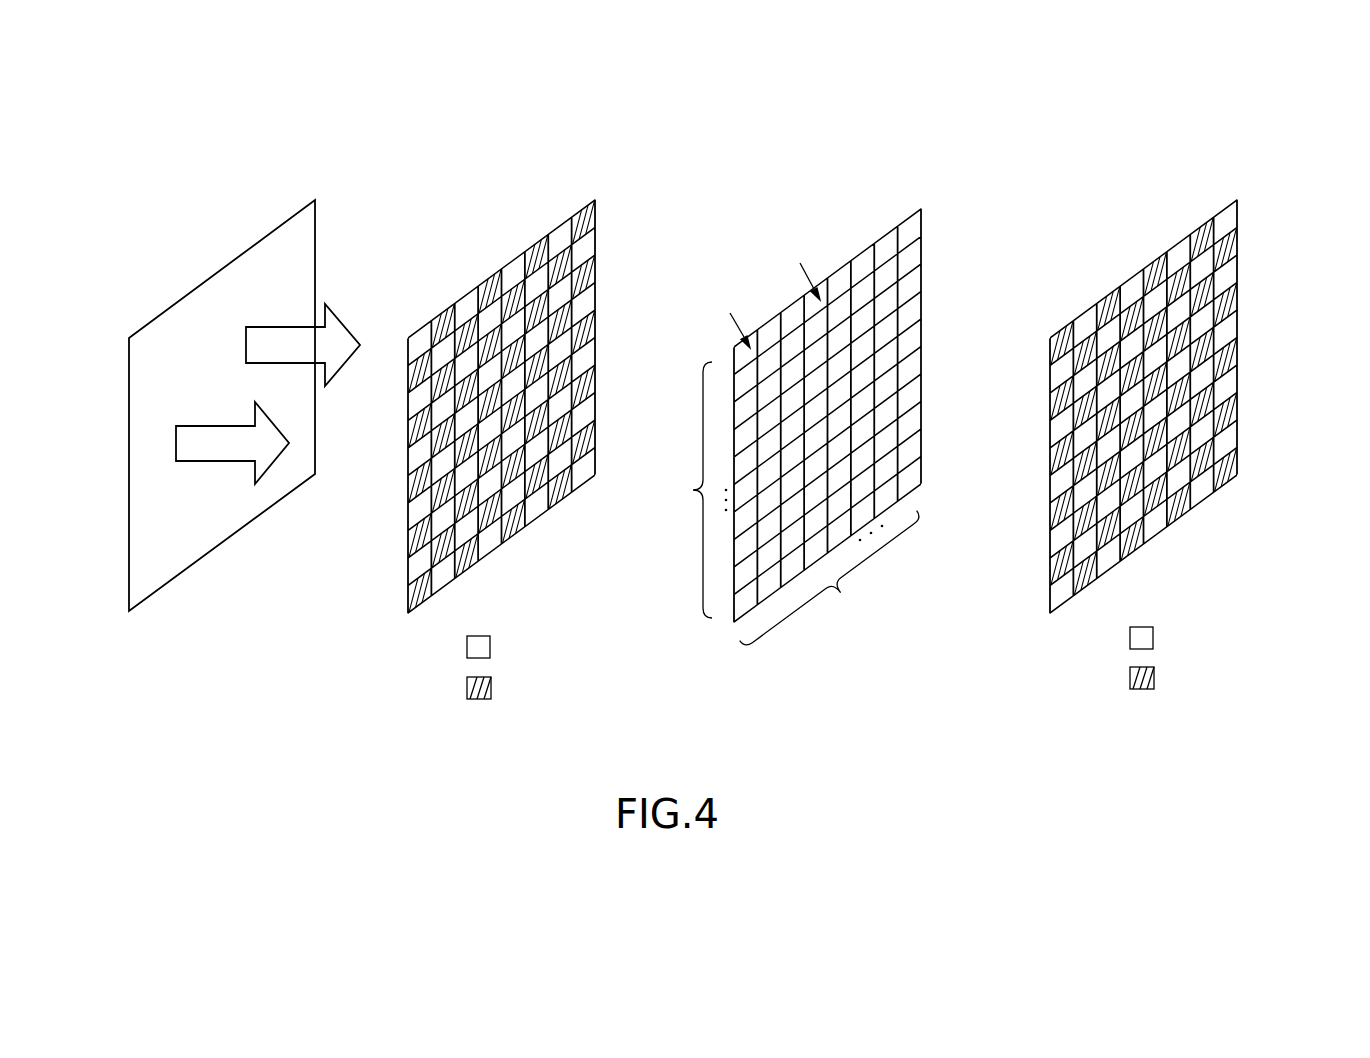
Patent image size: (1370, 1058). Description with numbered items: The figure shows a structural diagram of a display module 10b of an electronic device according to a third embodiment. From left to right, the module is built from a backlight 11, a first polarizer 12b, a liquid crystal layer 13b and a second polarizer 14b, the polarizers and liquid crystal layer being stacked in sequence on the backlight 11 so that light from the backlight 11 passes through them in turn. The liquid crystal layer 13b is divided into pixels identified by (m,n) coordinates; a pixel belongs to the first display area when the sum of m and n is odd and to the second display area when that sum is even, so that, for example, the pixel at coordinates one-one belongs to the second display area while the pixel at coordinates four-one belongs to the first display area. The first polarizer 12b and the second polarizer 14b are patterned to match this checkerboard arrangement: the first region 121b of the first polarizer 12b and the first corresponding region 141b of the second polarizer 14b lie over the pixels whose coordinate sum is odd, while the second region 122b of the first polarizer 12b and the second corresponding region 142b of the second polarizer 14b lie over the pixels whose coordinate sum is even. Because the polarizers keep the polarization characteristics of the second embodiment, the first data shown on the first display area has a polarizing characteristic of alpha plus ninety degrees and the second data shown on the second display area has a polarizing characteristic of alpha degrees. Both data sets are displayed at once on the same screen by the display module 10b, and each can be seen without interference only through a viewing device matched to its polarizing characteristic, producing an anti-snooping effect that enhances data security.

The display module 10b is at (1277, 79).
The backlight 11 is at (248, 257).
The first polarizer 12b is at (520, 120).
The first region 121b is at (537, 250).
The second region 122b is at (583, 308).
The liquid crystal layer 13b is at (862, 260).
The second polarizer 14b is at (1135, 125).
The first corresponding region 141b is at (1180, 253).
The second corresponding region 142b is at (1238, 292).